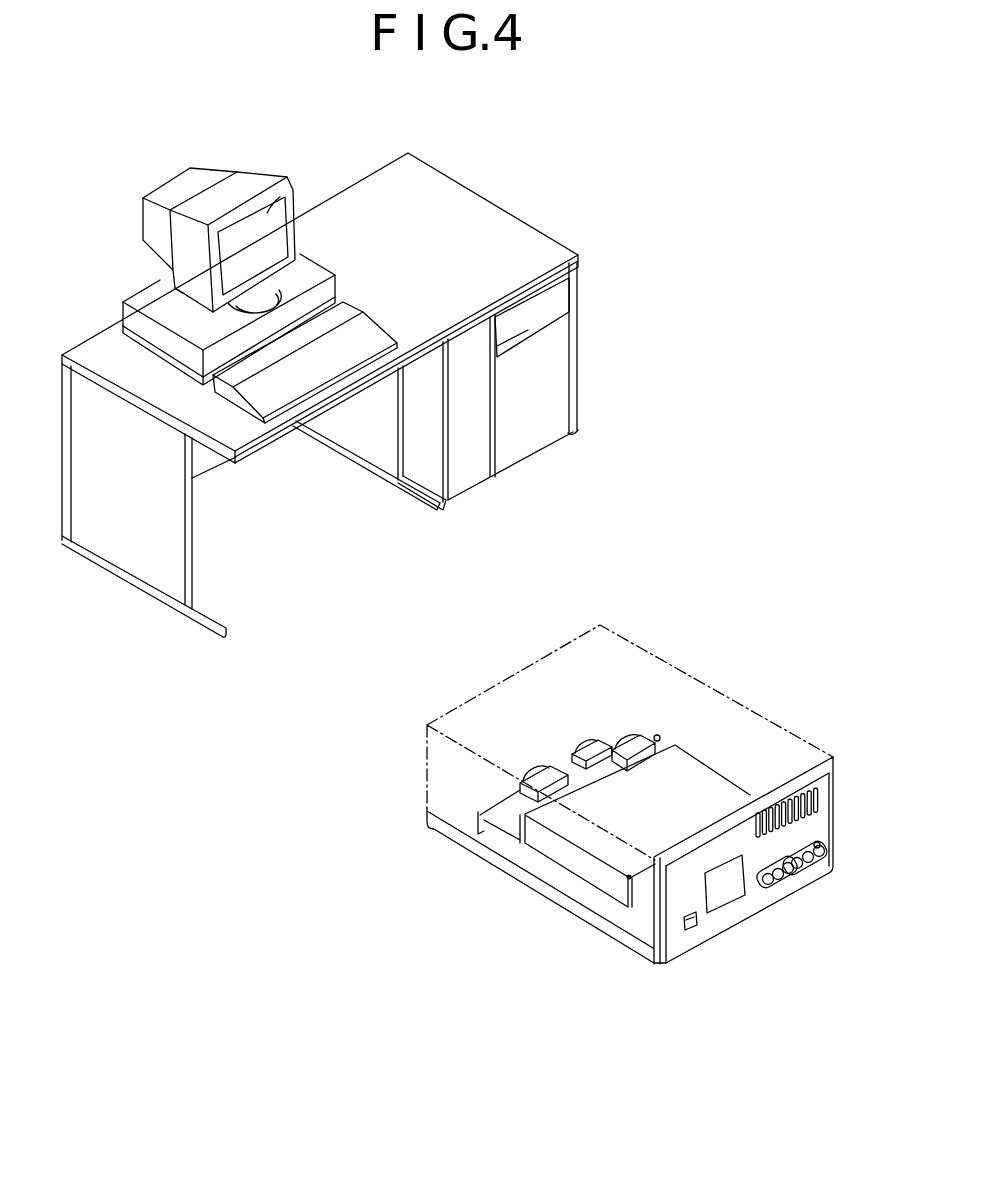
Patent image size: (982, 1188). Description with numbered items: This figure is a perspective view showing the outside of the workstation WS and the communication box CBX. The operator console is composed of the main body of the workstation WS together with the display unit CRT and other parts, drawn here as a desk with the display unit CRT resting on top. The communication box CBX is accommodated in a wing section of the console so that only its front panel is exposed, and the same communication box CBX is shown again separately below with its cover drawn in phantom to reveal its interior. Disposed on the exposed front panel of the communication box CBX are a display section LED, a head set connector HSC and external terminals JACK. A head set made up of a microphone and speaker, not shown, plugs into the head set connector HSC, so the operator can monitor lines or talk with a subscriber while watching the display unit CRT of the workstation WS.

The workstation WS is at (137, 273).
The display unit CRT is at (289, 191).
The communication box CBX is at (559, 306).
The display section LED is at (733, 888).
The external terminals JACK is at (799, 878).
The head set connector HSC is at (698, 928).